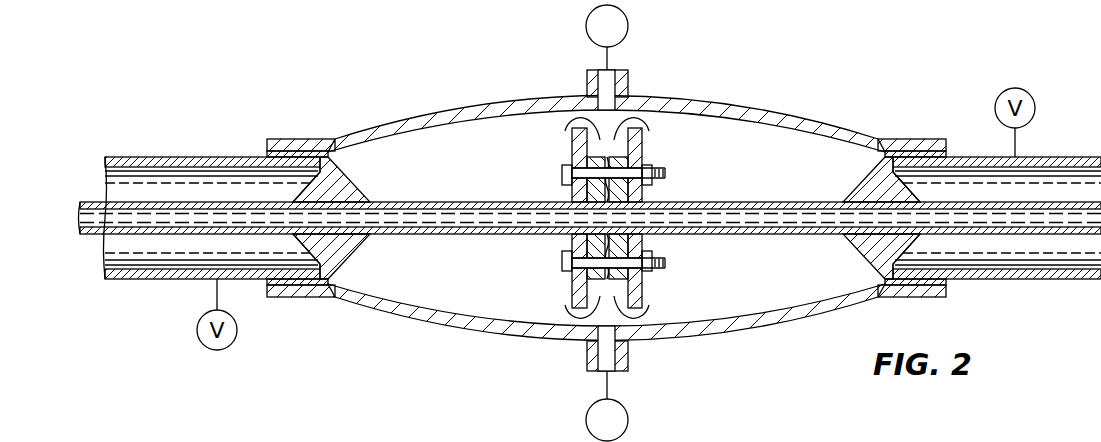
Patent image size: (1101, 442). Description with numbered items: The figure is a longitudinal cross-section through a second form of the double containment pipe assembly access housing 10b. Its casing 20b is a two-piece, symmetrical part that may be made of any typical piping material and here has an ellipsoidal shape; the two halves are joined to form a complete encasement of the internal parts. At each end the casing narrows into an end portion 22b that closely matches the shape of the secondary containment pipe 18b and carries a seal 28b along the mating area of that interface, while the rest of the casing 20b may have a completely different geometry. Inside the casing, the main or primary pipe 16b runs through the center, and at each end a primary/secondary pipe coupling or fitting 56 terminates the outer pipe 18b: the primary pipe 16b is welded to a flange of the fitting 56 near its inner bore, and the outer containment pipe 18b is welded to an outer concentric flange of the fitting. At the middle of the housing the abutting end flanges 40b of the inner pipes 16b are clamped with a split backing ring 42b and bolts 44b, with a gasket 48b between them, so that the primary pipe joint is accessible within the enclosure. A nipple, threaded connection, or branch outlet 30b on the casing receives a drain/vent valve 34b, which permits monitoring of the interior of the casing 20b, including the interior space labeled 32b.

The access housing 10b is at (816, 110).
The casing 20b is at (822, 312).
The primary pipe 16b is at (498, 234).
The secondary containment pipe 18b is at (165, 280).
The end portion of casing 22b is at (301, 139).
The seal 28b is at (268, 152).
The branch outlet 30b is at (612, 82).
The drain/vent valve 34b is at (628, 27).
The chamber 32b is at (728, 291).
The end flanges 40b is at (642, 134).
The split backing ring 42b is at (648, 157).
The bolts 44b is at (572, 284).
The gasket 48b is at (572, 131).
The pipe coupling or fitting 56 is at (352, 250).